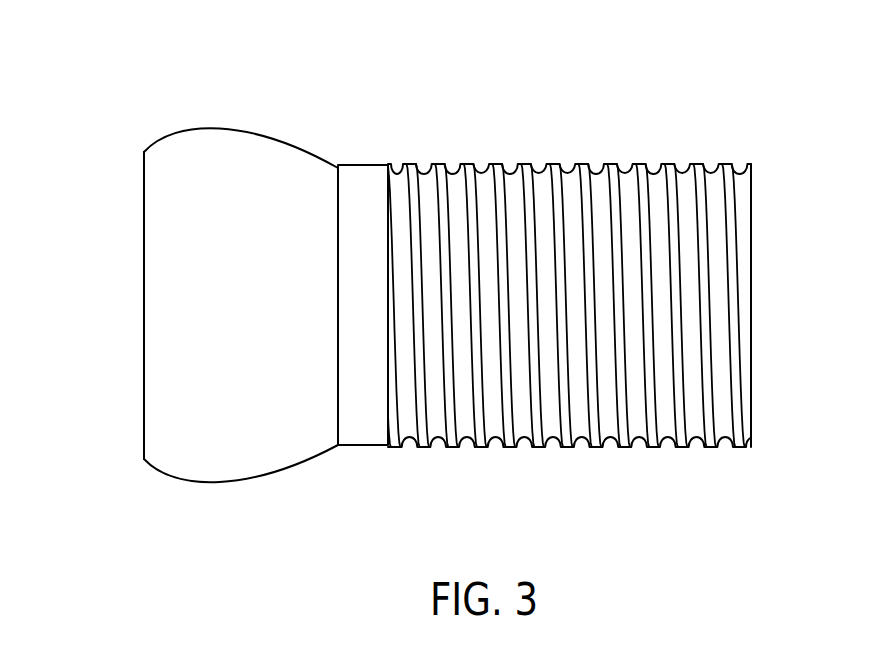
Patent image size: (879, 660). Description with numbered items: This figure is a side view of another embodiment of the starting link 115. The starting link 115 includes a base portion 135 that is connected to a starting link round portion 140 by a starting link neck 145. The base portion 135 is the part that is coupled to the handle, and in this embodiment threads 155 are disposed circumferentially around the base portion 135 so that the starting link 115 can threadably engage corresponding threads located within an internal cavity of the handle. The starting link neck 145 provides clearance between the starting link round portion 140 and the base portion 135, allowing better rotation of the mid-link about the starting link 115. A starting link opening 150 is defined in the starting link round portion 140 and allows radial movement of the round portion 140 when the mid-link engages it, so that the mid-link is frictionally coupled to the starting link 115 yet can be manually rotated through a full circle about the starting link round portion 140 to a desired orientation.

The starting link 115 is at (103, 110).
The starting link round portion 140 is at (240, 134).
The starting link opening 150 is at (142, 308).
The starting link neck 145 is at (365, 172).
The base portion 135 is at (505, 163).
The threads 155 is at (740, 305).